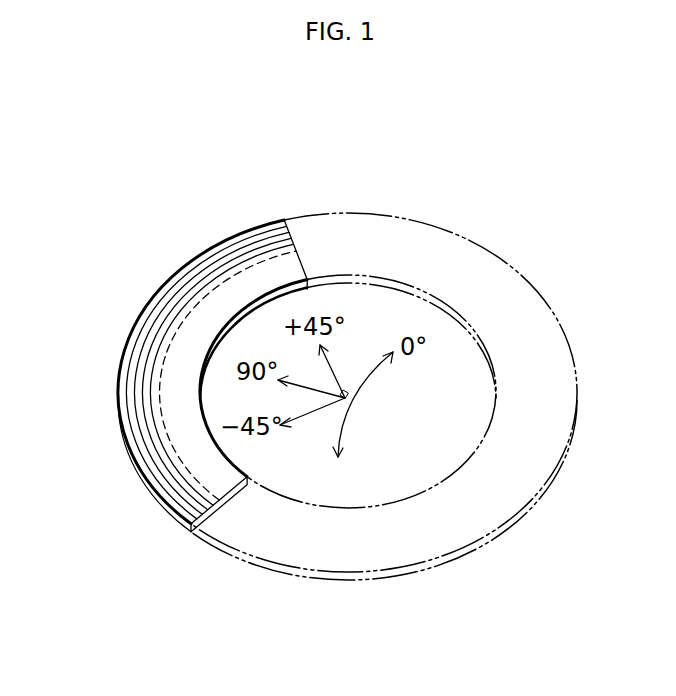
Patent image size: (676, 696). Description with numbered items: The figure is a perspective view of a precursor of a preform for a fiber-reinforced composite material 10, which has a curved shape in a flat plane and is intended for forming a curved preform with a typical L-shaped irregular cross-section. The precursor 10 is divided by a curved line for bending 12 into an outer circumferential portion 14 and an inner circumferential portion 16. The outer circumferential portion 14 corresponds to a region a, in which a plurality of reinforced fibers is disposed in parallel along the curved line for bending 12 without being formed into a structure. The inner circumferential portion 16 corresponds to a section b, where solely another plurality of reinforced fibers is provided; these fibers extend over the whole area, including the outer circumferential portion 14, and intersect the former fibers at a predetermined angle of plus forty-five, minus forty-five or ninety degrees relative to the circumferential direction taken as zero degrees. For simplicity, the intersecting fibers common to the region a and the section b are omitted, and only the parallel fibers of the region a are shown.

The precursor of a preform for a fiber-reinforced composite material 10 is at (312, 357).
The curved line for bending 12 is at (220, 282).
The outer circumferential portion 14 is at (137, 405).
The inner circumferential portion 16 is at (207, 458).
The region a is at (140, 330).
The section b is at (198, 322).